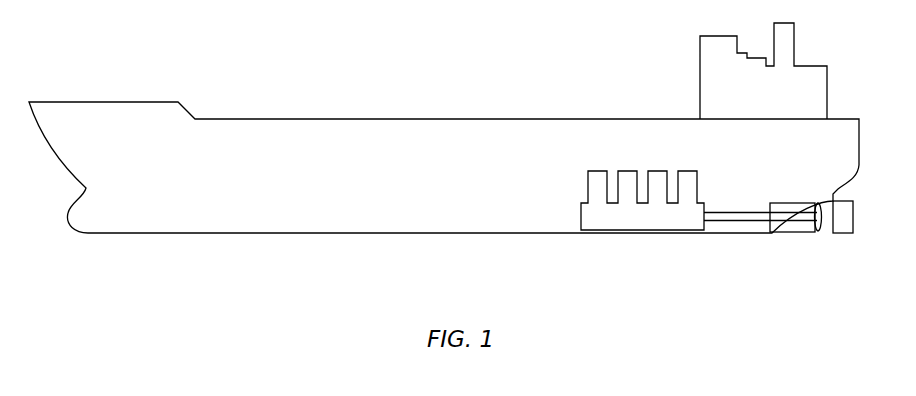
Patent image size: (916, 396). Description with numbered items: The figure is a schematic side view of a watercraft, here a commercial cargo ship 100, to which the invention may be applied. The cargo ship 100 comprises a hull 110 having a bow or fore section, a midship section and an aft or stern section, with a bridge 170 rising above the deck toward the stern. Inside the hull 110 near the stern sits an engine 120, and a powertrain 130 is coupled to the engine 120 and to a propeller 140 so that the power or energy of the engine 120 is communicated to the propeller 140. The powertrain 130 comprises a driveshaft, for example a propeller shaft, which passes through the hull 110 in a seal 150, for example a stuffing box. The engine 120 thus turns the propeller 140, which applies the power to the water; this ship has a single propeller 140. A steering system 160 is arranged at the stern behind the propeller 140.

The cargo ship 100 is at (330, 31).
The hull 110 is at (277, 188).
The engine 120 is at (657, 224).
The powertrain 130 is at (726, 222).
The propeller 140 is at (819, 231).
The seal 150 is at (777, 226).
The steering system 160 is at (853, 216).
The bridge 170 is at (775, 99).